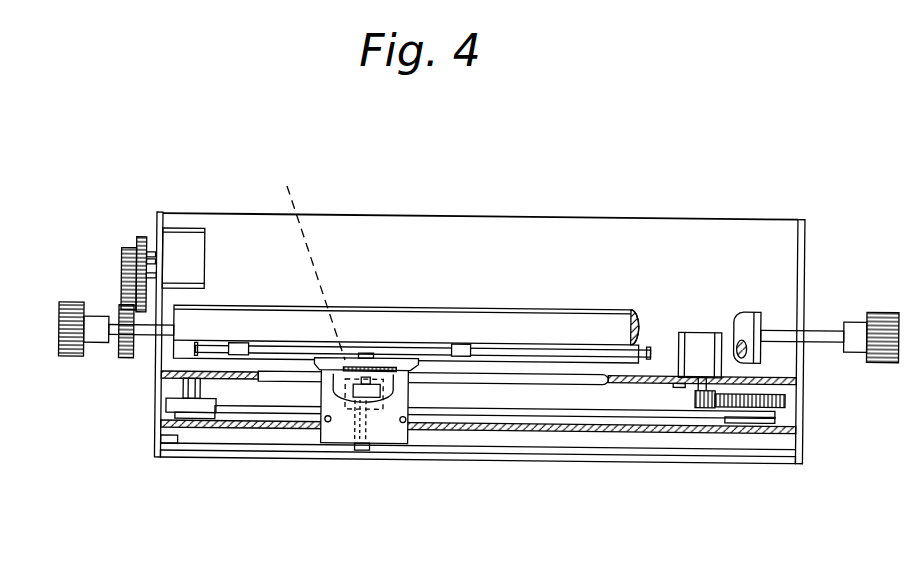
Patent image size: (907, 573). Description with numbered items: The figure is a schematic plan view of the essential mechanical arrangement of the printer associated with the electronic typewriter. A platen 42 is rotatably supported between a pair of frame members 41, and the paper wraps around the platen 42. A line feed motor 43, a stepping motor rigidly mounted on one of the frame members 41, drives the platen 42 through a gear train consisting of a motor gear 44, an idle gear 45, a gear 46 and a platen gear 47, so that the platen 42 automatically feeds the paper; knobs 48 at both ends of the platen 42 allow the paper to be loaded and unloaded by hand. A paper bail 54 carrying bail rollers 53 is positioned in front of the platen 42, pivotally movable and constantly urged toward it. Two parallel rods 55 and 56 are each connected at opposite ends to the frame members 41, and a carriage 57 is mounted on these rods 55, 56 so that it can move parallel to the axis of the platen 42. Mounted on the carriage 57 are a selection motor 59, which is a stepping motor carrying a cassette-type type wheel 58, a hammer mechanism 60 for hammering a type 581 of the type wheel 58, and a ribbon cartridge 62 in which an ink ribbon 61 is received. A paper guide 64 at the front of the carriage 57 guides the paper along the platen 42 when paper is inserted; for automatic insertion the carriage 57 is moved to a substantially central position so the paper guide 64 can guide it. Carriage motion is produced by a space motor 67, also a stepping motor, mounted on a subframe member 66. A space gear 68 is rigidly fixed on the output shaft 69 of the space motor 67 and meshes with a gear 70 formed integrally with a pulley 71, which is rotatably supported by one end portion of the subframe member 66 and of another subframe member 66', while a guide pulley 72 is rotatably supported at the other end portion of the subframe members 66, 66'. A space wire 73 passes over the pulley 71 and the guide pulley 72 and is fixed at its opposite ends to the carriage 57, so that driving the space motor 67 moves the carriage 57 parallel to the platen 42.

The frame members 41 is at (165, 216).
The platen 42 is at (586, 322).
The line feed motor 43 is at (193, 244).
The motor gear 44 is at (147, 245).
The idle gear 45 is at (143, 237).
The gear 46 is at (130, 248).
The platen gear 47 is at (127, 360).
The knobs 48 is at (75, 306).
The bail rollers 53 is at (463, 346).
The paper bail 54 is at (541, 349).
The rod 55 is at (497, 375).
The rod 56 is at (451, 447).
The carriage 57 is at (341, 452).
The type wheel 58 is at (396, 367).
The type 581 is at (372, 355).
The selection motor 59 is at (309, 259).
The hammer mechanism 60 is at (382, 385).
The ink ribbon 61 is at (342, 360).
The ribbon cartridge 62 is at (384, 438).
The paper guide 64 is at (350, 366).
The subframe member 66 is at (478, 271).
The subframe member 66' is at (478, 467).
The space motor 67 is at (704, 341).
The space gear 68 is at (697, 398).
The output shaft 69 is at (680, 387).
The gear 70 is at (786, 424).
The pulley 71 is at (740, 418).
The guide pulley 72 is at (179, 430).
The space wire 73 is at (263, 414).